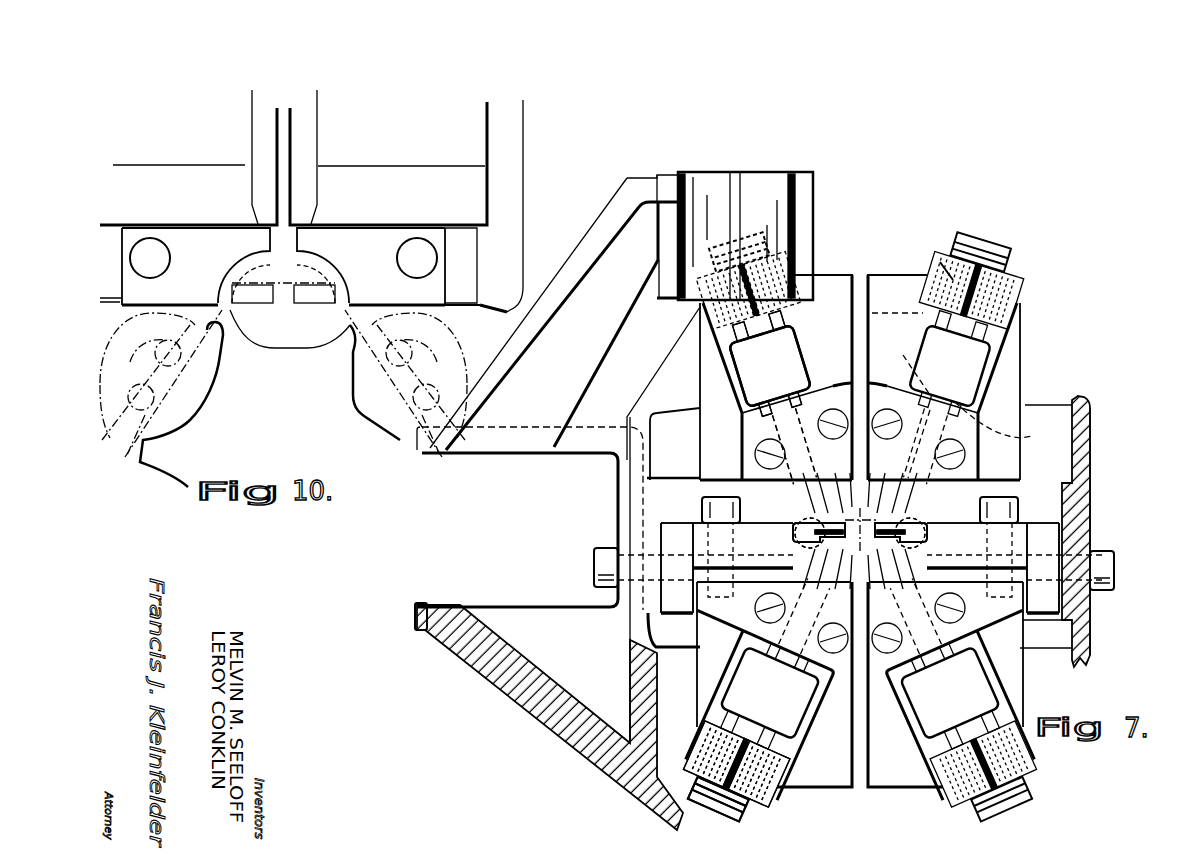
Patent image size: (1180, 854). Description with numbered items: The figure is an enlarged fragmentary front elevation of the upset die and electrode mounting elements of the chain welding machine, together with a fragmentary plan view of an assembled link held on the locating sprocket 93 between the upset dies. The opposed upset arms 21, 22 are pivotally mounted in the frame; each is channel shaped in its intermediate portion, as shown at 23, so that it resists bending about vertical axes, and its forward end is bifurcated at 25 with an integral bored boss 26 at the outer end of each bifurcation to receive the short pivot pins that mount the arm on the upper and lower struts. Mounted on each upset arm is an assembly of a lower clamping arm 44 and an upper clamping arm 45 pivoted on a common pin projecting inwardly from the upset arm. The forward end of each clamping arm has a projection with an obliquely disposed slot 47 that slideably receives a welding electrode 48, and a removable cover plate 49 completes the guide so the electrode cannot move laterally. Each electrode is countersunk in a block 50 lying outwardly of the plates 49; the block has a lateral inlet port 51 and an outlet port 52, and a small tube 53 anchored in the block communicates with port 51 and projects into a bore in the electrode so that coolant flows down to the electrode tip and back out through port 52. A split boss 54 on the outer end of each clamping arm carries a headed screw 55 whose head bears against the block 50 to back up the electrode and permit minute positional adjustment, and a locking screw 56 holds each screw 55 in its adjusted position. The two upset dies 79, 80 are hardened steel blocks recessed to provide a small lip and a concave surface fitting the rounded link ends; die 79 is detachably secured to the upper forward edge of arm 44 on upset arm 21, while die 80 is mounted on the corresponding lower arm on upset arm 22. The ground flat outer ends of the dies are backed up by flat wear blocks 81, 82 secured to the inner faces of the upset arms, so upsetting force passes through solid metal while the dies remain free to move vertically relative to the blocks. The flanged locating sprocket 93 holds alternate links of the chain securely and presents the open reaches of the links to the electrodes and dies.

In FIG. 7, the upset arm 21 is at (564, 472).
In FIG. 7, the upset arm 22 is at (1108, 428).
In FIG. 10, the channel shaped intermediate portion 23 is at (517, 168).
In FIG. 7, the channel shaped intermediate portion 23 is at (428, 452).
In FIG. 7, the bifurcation 25 is at (590, 283).
In FIG. 7, the bored boss 26 is at (684, 175).
In FIG. 7, the lower clamping arm 44 is at (830, 780).
In FIG. 7, the upper clamping arm 45 is at (830, 278).
In FIG. 7, the obliquely disposed slot 47 is at (1028, 425).
In FIG. 10, the welding electrode 48 is at (258, 263).
In FIG. 7, the welding electrode 48 is at (823, 508).
In FIG. 7, the removable cover plate 49 is at (743, 440).
In FIG. 7, the block 50 is at (793, 352).
In FIG. 7, the inlet port 51 is at (940, 330).
In FIG. 7, the outlet port 52 is at (992, 430).
In FIG. 7, the tube 53 is at (910, 360).
In FIG. 7, the split boss 54 is at (1027, 291).
In FIG. 7, the headed screw 55 is at (700, 268).
In FIG. 7, the locking screw 56 is at (947, 262).
In FIG. 10, the upset die 79 is at (189, 245).
In FIG. 7, the upset die 79 is at (757, 532).
In FIG. 10, the upset die 80 is at (373, 245).
In FIG. 7, the upset die 80 is at (953, 535).
In FIG. 10, the wear block 81 is at (112, 233).
In FIG. 7, the wear block 81 is at (668, 542).
In FIG. 10, the wear block 82 is at (462, 243).
In FIG. 7, the wear block 82 is at (1050, 543).
In FIG. 10, the locating sprocket 93 is at (252, 427).